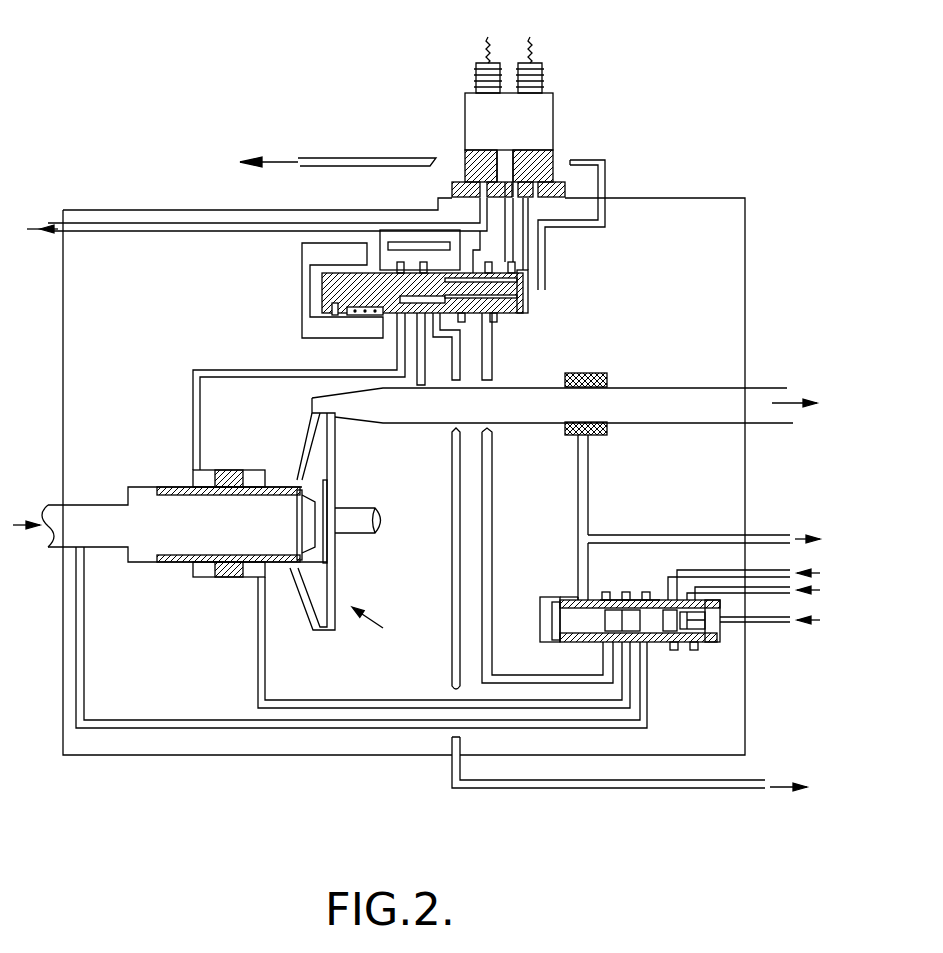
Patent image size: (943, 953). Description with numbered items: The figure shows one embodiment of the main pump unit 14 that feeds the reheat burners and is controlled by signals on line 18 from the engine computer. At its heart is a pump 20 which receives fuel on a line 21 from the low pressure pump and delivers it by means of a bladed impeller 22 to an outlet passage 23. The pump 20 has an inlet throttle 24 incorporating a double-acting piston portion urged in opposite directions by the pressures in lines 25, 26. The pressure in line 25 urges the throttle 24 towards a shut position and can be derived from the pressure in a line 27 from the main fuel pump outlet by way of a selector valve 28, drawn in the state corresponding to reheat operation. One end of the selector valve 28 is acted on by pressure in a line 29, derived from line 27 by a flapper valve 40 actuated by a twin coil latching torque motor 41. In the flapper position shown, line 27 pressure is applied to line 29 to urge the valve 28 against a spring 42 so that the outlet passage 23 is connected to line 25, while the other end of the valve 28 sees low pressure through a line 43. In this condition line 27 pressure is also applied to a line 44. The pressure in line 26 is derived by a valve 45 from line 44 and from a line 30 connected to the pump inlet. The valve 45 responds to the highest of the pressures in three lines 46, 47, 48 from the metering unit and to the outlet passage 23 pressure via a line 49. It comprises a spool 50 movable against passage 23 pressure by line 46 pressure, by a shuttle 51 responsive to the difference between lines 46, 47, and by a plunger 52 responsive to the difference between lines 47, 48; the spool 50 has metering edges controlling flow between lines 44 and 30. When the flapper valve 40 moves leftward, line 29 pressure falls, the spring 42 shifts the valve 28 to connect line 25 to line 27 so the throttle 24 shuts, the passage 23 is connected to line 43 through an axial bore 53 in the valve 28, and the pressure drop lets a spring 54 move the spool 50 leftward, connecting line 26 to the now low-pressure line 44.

The main pump unit 14 is at (267, 747).
The signal line 18 is at (489, 42).
The pump 20 is at (379, 631).
The inlet line 21 is at (56, 520).
The bladed impeller 22 is at (316, 455).
The outlet passage 23 is at (748, 410).
The inlet throttle 24 is at (233, 466).
The line 25 is at (195, 417).
The line 26 is at (263, 681).
The line 27 is at (60, 225).
The selector valve 28 is at (340, 287).
The line 29 is at (310, 256).
The line 30 is at (185, 727).
The flapper valve 40 is at (505, 162).
The twin coil latching torque motor 41 is at (535, 130).
The spring 42 is at (367, 316).
The line 43 is at (385, 158).
The line 44 is at (488, 500).
The valve 45 is at (637, 590).
The line 46 is at (773, 580).
The line 47 is at (760, 594).
The line 48 is at (785, 624).
The line 49 is at (586, 470).
The spool 50 is at (575, 627).
The shuttle 51 is at (680, 637).
The plunger 52 is at (710, 637).
The axial bore 53 is at (518, 306).
The spring 54 is at (575, 600).